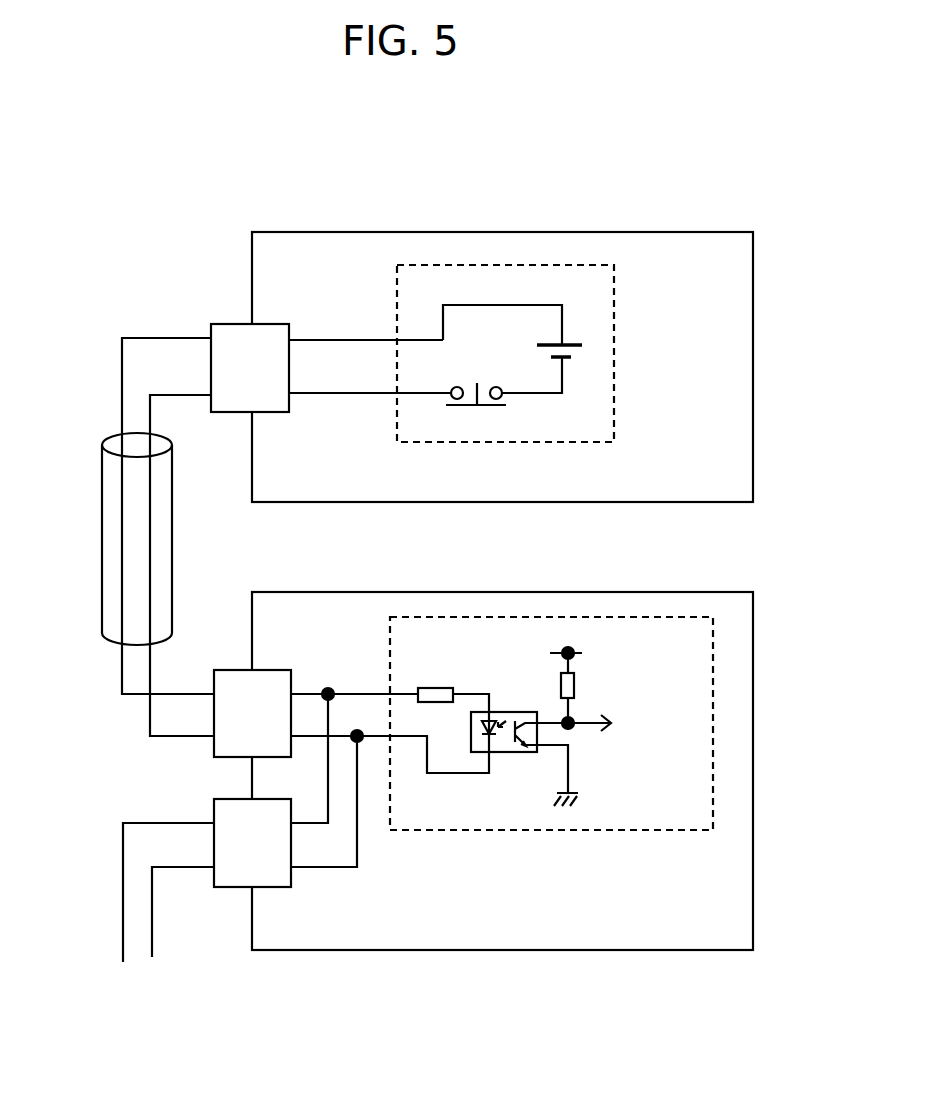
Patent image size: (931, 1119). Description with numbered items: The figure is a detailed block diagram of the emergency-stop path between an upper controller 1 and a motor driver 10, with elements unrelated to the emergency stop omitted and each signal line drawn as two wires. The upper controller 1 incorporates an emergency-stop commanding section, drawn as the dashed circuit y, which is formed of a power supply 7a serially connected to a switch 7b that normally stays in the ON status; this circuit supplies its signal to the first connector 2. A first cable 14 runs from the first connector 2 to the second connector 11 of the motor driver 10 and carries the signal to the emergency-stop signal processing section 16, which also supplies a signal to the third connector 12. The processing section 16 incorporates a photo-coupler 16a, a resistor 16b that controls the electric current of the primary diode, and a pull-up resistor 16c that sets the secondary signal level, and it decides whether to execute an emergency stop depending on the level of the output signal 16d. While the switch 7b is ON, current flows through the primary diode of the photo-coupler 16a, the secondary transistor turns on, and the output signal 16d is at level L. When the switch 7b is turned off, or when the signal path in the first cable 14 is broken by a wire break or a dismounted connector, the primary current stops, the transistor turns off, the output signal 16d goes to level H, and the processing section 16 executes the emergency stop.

The upper controller 1 is at (733, 232).
The first connector 2 is at (221, 322).
The switch circuit y is at (613, 314).
The power supply 7a is at (566, 334).
The switch 7b is at (476, 378).
The first cable 14 is at (100, 534).
The motor driver 10 is at (733, 592).
The second connector 11 is at (228, 672).
The third connector 12 is at (233, 877).
The emergency-stop signal processing section 16 is at (714, 702).
The photo-coupler 16a is at (509, 716).
The resistor 16b is at (439, 678).
The pull-up resistor 16c is at (587, 682).
The output signal 16d is at (618, 723).